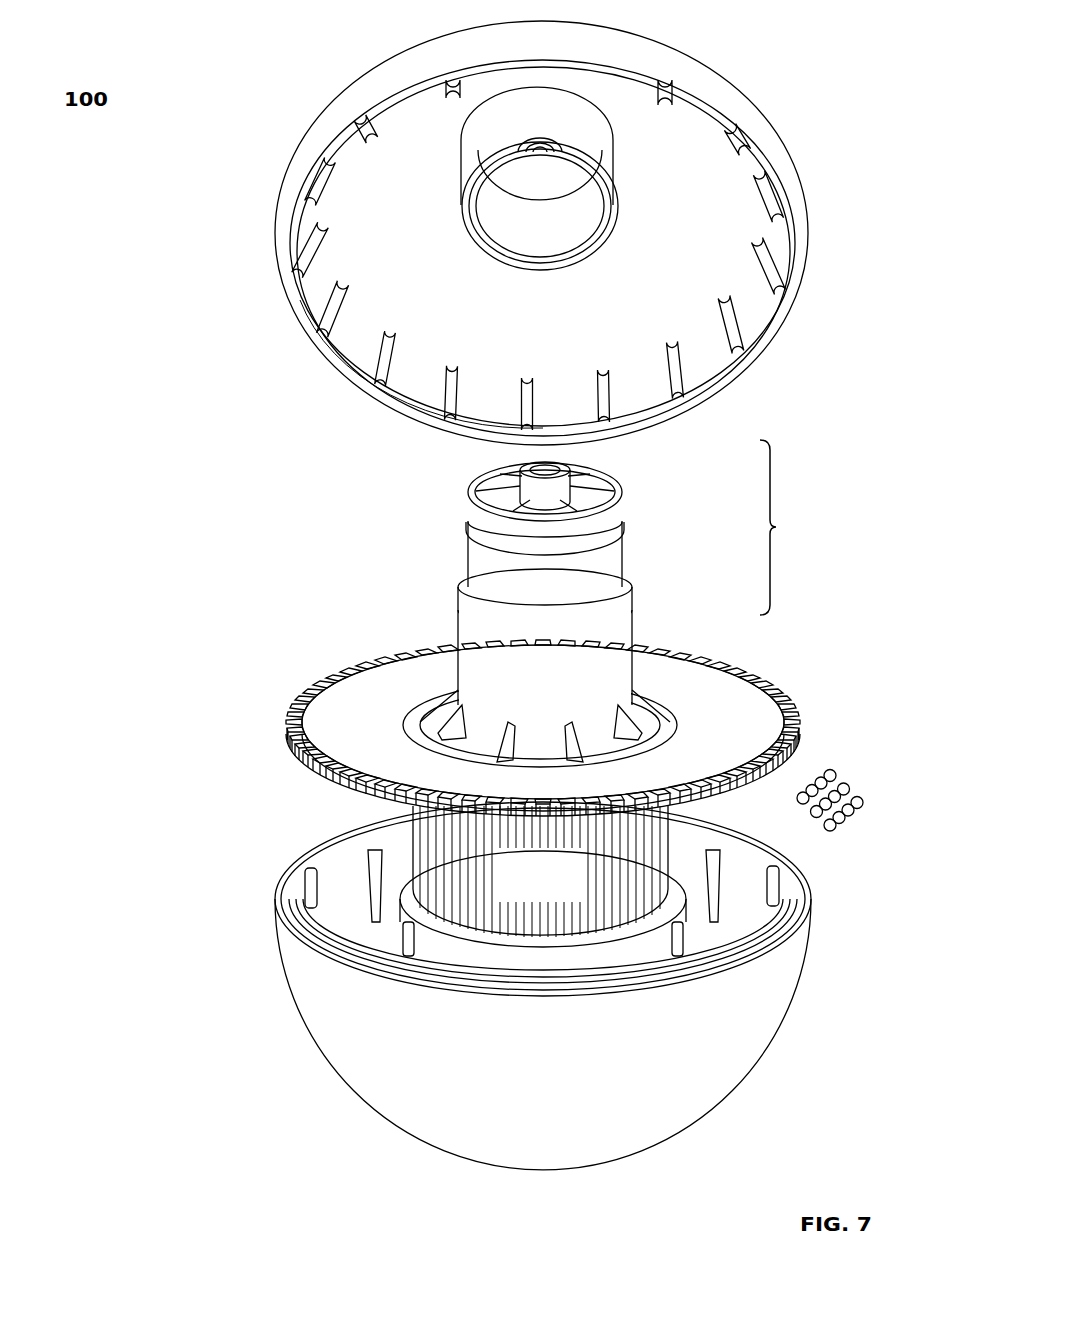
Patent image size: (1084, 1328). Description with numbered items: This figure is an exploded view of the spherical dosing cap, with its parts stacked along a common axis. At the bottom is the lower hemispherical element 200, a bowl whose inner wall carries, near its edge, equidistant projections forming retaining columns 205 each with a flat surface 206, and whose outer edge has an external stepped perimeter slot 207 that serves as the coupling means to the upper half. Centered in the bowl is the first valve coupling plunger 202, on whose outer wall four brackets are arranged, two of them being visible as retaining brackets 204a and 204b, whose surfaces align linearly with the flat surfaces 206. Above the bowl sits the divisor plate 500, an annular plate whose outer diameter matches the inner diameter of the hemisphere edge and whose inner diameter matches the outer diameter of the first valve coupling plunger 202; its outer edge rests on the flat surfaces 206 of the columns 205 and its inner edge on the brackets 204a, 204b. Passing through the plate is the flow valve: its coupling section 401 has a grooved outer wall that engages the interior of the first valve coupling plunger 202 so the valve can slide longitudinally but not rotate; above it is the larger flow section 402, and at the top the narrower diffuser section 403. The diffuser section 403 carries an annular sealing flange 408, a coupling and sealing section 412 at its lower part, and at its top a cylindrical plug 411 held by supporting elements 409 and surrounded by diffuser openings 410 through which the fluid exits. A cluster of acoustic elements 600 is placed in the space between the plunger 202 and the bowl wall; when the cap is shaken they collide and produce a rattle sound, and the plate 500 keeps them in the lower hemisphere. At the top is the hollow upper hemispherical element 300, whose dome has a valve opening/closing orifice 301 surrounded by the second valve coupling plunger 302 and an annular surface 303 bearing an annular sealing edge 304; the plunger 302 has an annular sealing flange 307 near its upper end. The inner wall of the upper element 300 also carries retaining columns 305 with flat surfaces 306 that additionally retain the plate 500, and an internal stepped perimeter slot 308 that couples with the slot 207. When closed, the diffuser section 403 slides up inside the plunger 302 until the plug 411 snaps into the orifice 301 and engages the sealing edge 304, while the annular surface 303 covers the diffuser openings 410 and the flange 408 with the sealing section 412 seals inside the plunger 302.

The lower hemispherical element 200 is at (543, 1034).
The first valve coupling plunger 202 is at (397, 911).
The retaining bracket 204a is at (680, 941).
The retaining bracket 204b is at (403, 938).
The retaining column 205 is at (303, 887).
The flat surface 206 is at (320, 866).
The external stepped perimeter slot 207 is at (772, 940).
The upper hemispherical element 300 is at (541, 233).
The valve opening/closing orifice 301 is at (547, 155).
The second valve coupling plunger 302 is at (462, 160).
The annular surface 303 is at (513, 189).
The annular sealing edge 304 is at (517, 165).
The retaining column 305 is at (380, 375).
The flat surface 306 is at (373, 393).
The annular sealing flange 307 is at (546, 248).
The internal stepped perimeter slot 308 is at (666, 408).
The coupling section 401 is at (540, 871).
The flow section 402 is at (540, 688).
The diffuser section 403 is at (654, 534).
The annular sealing flange 408 is at (604, 548).
The supporting element 409 is at (528, 513).
The diffuser opening 410 is at (580, 482).
The cylindrical plug 411 is at (572, 466).
The coupling and sealing section 412 is at (636, 599).
The divisor plate 500 is at (288, 724).
The acoustic elements 600 is at (838, 776).